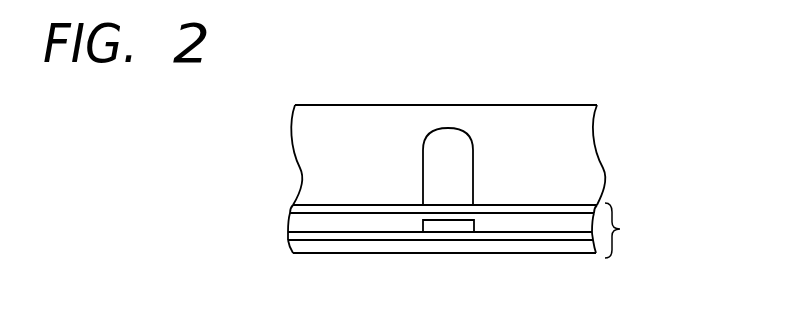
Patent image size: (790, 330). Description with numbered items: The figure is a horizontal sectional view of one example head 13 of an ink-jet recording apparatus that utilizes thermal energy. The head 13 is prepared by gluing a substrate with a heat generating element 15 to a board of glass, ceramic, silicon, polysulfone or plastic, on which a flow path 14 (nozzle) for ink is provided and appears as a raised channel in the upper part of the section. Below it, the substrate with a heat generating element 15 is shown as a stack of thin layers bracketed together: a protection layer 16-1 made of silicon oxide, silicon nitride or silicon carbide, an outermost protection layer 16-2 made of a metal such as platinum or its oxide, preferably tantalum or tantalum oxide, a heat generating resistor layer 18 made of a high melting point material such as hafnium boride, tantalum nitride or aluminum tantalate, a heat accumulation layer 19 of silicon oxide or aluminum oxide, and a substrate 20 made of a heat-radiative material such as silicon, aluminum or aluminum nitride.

The head 13 is at (351, 105).
The flow path 14 is at (450, 128).
The substrate with a heat generating element 15 is at (626, 230).
The protection layer 16-1 is at (292, 222).
The outermost protection layer 16-2 is at (373, 210).
The heat generating resistor layer 18 is at (452, 226).
The heat accumulation layer 19 is at (497, 238).
The substrate 20 is at (552, 247).